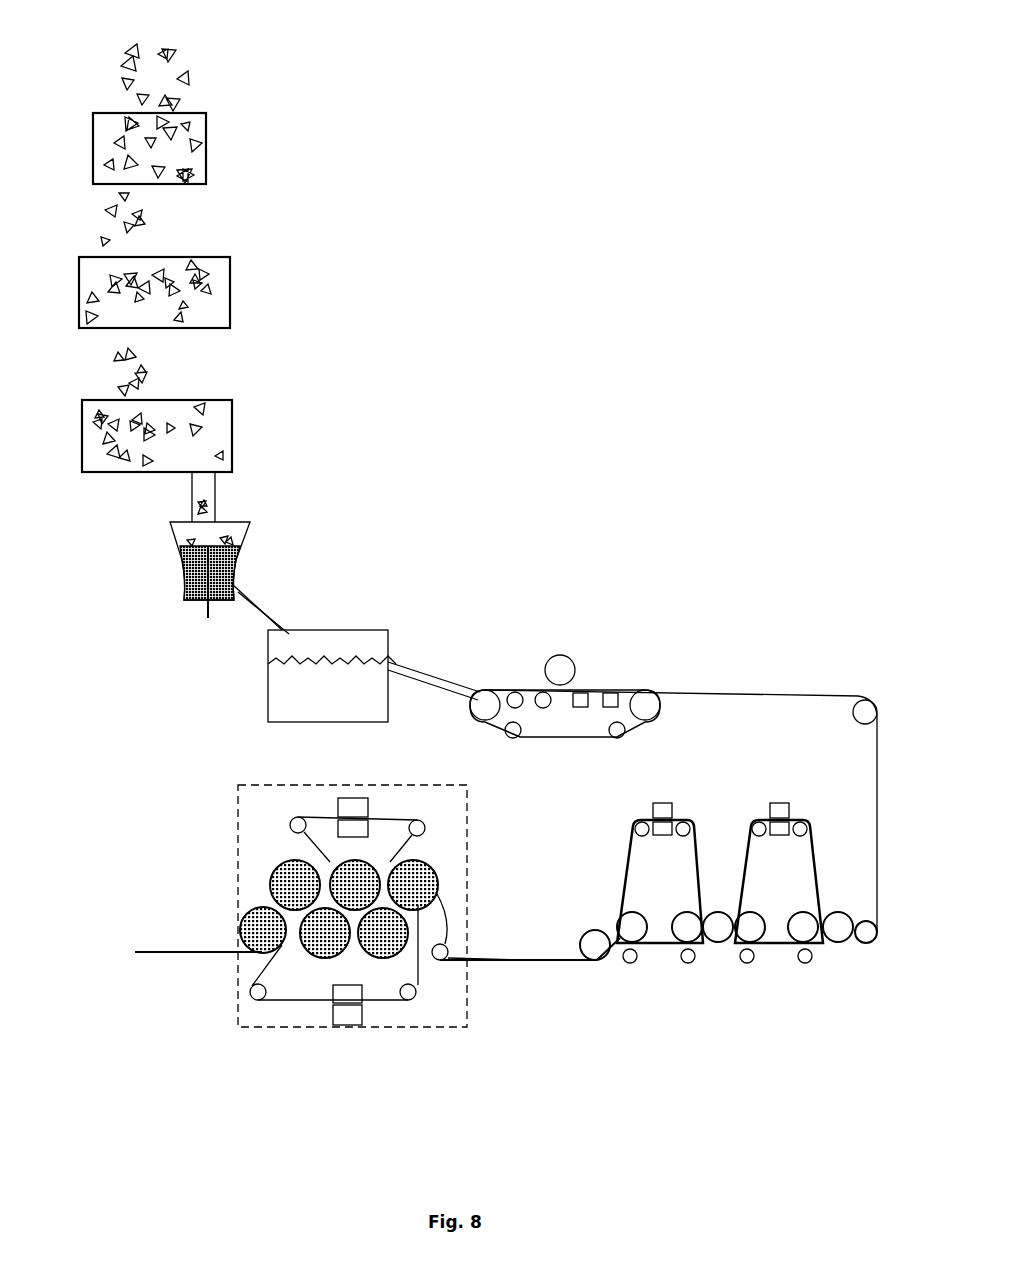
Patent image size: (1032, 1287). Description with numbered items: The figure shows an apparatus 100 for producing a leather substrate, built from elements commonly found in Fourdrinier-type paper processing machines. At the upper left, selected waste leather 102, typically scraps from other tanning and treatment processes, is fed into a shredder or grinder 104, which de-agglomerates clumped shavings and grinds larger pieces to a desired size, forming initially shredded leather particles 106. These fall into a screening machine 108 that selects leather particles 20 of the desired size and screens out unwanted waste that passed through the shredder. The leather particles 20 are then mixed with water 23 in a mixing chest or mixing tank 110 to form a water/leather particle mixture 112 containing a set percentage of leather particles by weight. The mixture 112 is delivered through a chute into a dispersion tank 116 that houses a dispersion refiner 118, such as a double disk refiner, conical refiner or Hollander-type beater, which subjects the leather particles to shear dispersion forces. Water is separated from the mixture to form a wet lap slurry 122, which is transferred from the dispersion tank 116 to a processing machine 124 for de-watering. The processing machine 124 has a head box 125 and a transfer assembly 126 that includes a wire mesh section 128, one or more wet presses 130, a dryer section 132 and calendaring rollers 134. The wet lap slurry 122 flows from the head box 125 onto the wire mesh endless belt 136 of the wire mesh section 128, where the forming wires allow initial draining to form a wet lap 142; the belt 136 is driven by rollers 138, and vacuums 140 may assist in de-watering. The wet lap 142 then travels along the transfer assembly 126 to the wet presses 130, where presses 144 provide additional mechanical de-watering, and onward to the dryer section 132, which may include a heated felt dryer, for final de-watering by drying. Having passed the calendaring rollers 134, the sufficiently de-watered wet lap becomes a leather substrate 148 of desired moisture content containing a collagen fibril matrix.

The apparatus 100 is at (641, 92).
The waste leather 102 is at (178, 63).
The shredder or grinder 104 is at (222, 155).
The initially shredded leather particles 106 is at (140, 214).
The screening machine 108 is at (246, 292).
The leather particles 20 is at (146, 360).
The water 23 is at (218, 410).
The mixing chest or mixing tank 110 is at (198, 408).
The water/leather particle mixture 112 is at (88, 462).
The dispersion tank 116 is at (176, 538).
The dispersion refiner 118 is at (186, 592).
The wet lap slurry 122 is at (269, 630).
The processing machine 124 is at (90, 742).
The head box 125 is at (306, 722).
The transfer assembly 126 is at (470, 675).
The wire mesh section 128 is at (571, 718).
The wet presses 130 is at (725, 923).
The dryer section 132 is at (343, 1042).
The calendaring rollers 134 is at (337, 940).
The wire mesh endless belt 136 is at (506, 733).
The rollers 138 is at (486, 704).
The vacuums 140 is at (583, 692).
The wet lap 142 is at (737, 689).
The presses 144 is at (596, 950).
The leather substrate 148 is at (158, 950).